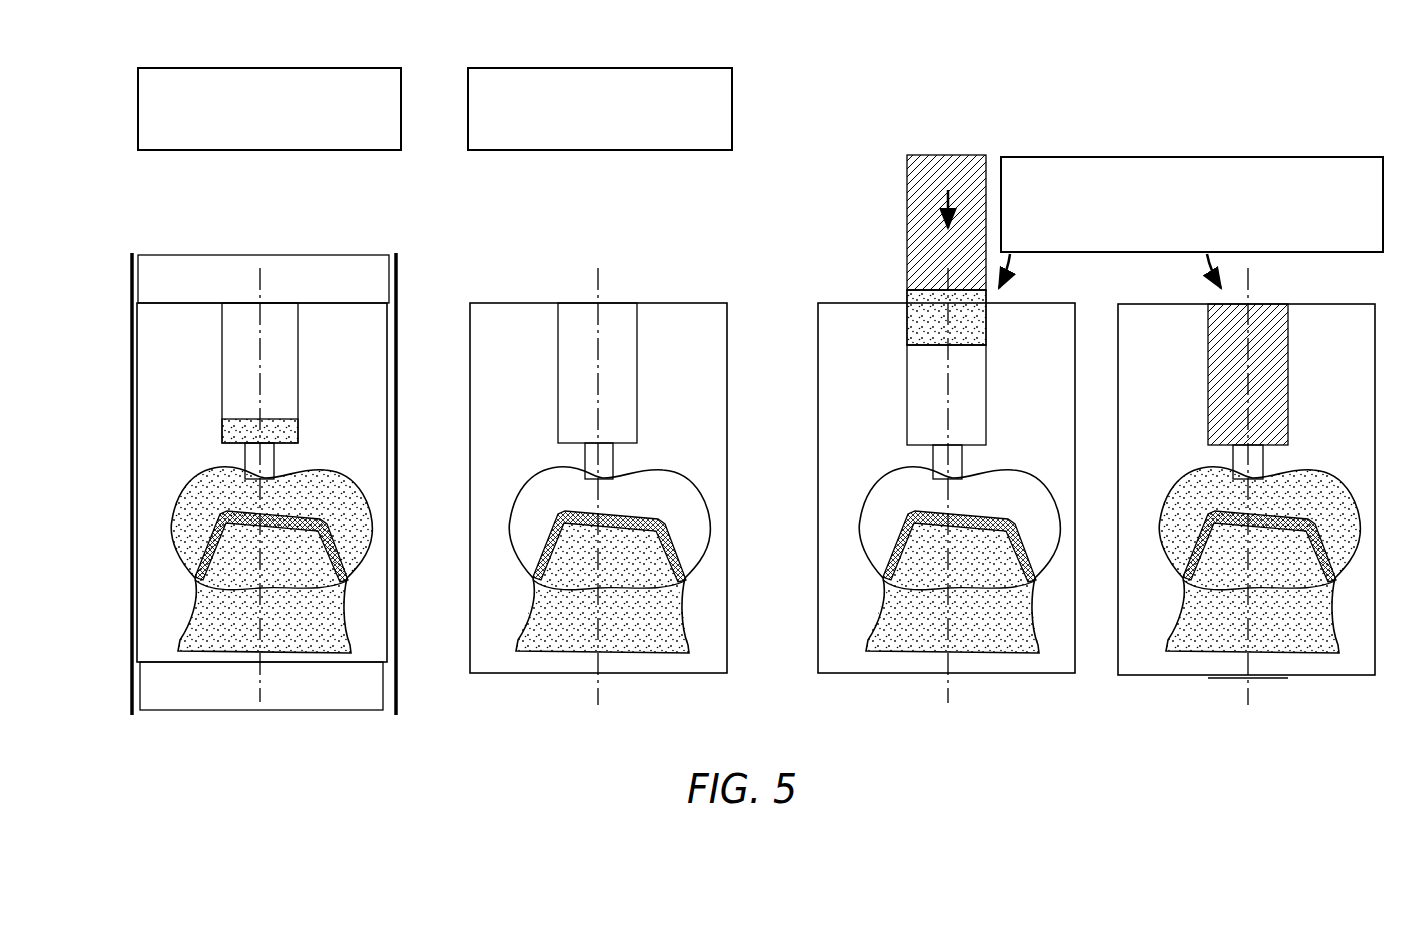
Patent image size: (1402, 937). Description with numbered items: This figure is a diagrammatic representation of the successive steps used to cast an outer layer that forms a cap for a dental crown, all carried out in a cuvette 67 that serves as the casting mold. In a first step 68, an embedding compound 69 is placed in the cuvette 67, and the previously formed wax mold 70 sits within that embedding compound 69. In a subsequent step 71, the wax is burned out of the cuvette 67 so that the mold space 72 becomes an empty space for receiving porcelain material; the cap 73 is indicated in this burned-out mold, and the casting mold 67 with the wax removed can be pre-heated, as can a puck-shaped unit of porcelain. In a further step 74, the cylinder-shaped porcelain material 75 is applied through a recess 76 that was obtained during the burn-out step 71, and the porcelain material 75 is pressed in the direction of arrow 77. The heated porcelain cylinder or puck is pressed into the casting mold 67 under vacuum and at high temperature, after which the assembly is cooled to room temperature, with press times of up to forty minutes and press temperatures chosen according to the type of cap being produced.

The cuvette 67 is at (388, 250).
The step 68 is at (343, 85).
The embedding compound 69 is at (150, 330).
The mold 70 is at (339, 443).
The step 71 is at (677, 82).
The mold space 72 is at (683, 452).
The cap 73 is at (545, 545).
The step 74 is at (1323, 170).
The porcelain material 75 is at (920, 312).
The recess 76 is at (978, 375).
The arrow 77 is at (945, 200).